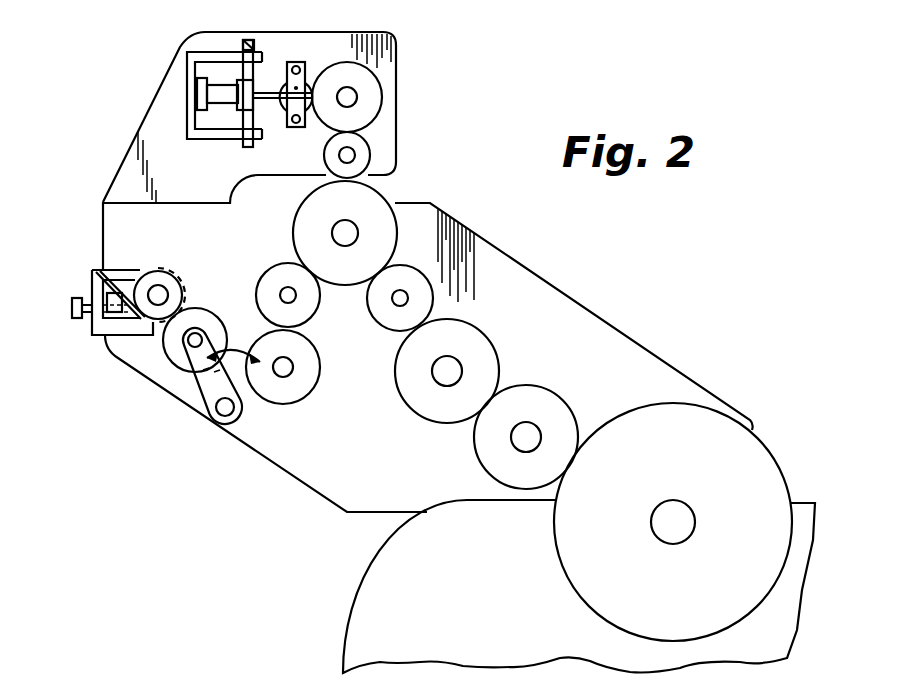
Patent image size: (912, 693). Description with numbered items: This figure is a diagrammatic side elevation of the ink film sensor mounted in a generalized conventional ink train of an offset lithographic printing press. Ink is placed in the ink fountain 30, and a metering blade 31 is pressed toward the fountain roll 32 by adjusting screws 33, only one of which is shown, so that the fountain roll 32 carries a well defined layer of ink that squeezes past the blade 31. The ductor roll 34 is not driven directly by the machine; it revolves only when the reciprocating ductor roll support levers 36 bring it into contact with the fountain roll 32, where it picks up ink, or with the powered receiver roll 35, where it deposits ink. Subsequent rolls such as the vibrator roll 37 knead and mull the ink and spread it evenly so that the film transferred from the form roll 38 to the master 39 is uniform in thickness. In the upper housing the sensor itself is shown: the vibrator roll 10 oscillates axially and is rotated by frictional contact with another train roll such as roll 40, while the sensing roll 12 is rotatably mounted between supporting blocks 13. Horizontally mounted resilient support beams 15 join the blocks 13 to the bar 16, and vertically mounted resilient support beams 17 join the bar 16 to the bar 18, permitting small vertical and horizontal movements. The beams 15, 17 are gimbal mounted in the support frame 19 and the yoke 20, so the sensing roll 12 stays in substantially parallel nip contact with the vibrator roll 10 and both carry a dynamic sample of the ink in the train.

The vibrator roll 10 is at (375, 80).
The sensing roll 12 is at (307, 80).
The supporting blocks 13 is at (285, 62).
The horizontally mounted resilient support beams 15 is at (284, 103).
The bar 16 is at (247, 103).
The vertically mounted resilient support beams 17 is at (205, 95).
The bar 18 is at (202, 108).
The support frame 19 is at (247, 45).
The yoke 20 is at (192, 52).
The ink fountain 30 is at (125, 285).
The metering blade 31 is at (132, 295).
The fountain roll 32 is at (175, 272).
The adjusting screws 33 is at (72, 308).
The ductor roll 34 is at (170, 345).
The receiver roll 35 is at (285, 397).
The ductor roll support levers 36 is at (202, 382).
The vibrator roll 37 is at (378, 210).
The form roll 38 is at (552, 400).
The master 39 is at (625, 432).
The roll 40 is at (362, 145).